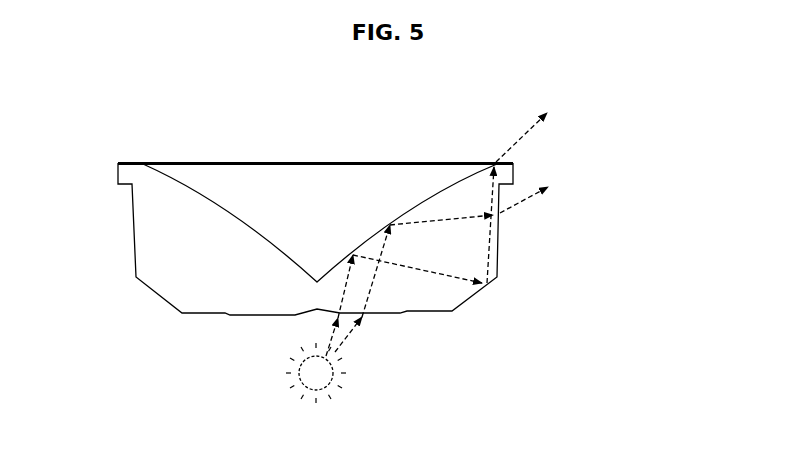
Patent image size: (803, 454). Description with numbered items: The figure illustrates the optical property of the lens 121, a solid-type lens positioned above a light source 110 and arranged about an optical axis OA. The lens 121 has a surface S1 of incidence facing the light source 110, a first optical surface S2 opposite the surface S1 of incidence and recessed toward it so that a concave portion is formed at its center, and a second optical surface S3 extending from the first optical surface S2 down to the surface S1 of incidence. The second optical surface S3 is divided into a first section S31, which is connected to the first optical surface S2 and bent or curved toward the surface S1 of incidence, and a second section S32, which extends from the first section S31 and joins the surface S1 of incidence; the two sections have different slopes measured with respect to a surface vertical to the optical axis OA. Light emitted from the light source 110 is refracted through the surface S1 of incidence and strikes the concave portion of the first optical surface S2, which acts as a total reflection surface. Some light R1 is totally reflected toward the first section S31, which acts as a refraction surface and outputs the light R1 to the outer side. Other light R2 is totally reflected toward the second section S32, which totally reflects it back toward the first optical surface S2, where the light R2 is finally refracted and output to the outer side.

The lens 121 is at (128, 205).
The light source 110 is at (341, 373).
The optical axis OA is at (315, 111).
The surface of incidence S1 is at (314, 295).
The first optical surface S2 is at (393, 207).
The second optical surface S3 is at (596, 300).
The first section S31 is at (500, 243).
The second section S32 is at (480, 307).
The light totally reflected toward the first section R1 is at (535, 195).
The light totally reflected toward the second section R2 is at (532, 129).